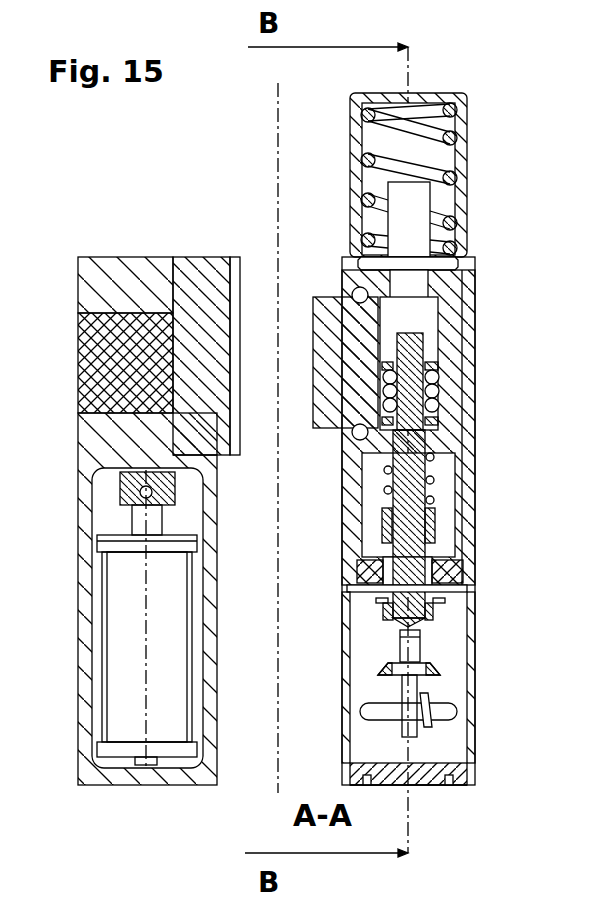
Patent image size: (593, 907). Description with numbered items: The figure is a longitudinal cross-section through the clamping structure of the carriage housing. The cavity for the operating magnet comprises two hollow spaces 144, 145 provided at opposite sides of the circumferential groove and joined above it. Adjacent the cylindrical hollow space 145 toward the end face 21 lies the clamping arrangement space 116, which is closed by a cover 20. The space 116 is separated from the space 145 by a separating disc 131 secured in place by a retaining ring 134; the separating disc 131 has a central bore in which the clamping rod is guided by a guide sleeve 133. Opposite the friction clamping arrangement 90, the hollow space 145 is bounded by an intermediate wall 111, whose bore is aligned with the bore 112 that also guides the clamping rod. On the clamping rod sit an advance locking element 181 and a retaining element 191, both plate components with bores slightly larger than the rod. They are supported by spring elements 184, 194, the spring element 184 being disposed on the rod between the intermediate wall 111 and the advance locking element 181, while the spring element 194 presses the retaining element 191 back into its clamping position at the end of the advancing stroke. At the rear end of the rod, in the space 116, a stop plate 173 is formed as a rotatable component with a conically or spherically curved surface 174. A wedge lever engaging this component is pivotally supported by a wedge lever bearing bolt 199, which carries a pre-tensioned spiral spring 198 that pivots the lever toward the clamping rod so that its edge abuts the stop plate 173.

The friction clamping structure 90 is at (475, 345).
The bore 112 is at (452, 427).
The intermediate wall 111 is at (438, 445).
The spring element 184 is at (434, 478).
The advance locking element 181 is at (422, 514).
The guide sleeve 133 is at (432, 545).
The separating disc 131 is at (446, 568).
The retaining ring 134 is at (468, 586).
The spring element 194 is at (440, 600).
The retaining element 191 is at (433, 610).
The conically or spherically curved surface 174 is at (438, 667).
The stop plate 173 is at (433, 673).
The spiral spring 198 is at (430, 693).
The clamping arrangement space 116 is at (450, 730).
The cover 20 is at (463, 773).
The end face 21 is at (428, 785).
The hollow space 144 is at (188, 511).
The cylindrical hollow space 145 is at (373, 528).
The wedge lever bearing bolt 199 is at (370, 712).